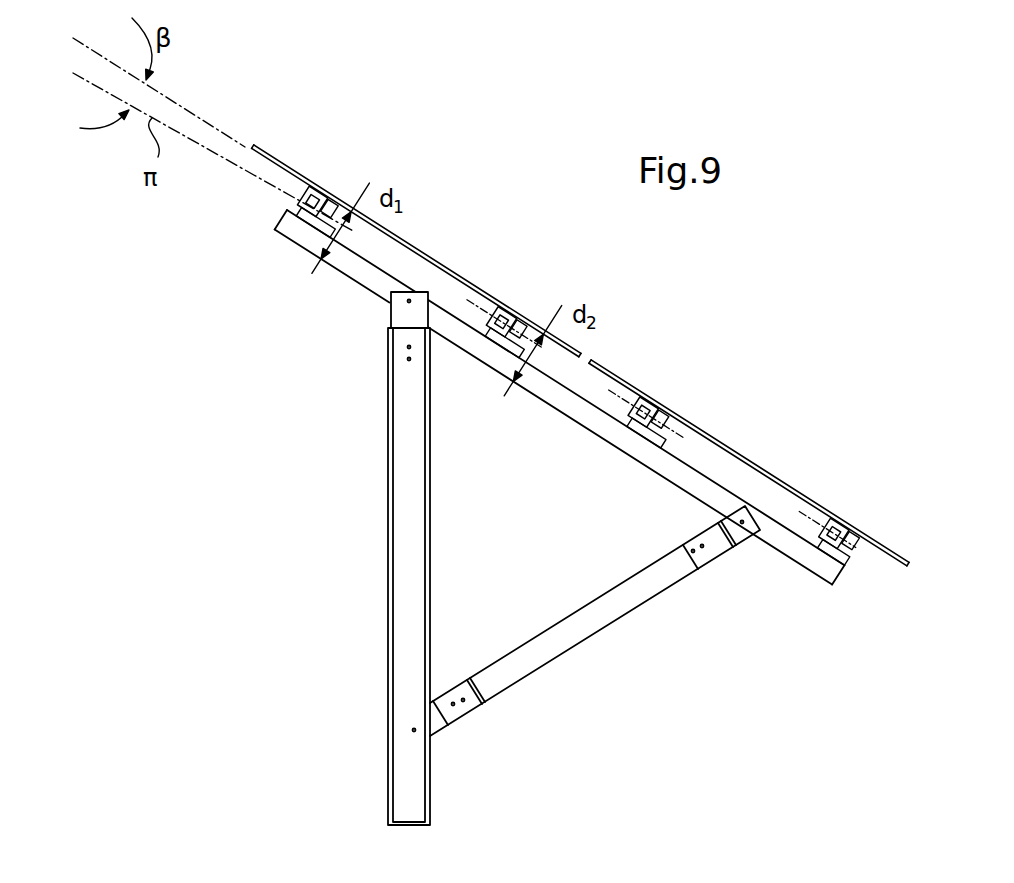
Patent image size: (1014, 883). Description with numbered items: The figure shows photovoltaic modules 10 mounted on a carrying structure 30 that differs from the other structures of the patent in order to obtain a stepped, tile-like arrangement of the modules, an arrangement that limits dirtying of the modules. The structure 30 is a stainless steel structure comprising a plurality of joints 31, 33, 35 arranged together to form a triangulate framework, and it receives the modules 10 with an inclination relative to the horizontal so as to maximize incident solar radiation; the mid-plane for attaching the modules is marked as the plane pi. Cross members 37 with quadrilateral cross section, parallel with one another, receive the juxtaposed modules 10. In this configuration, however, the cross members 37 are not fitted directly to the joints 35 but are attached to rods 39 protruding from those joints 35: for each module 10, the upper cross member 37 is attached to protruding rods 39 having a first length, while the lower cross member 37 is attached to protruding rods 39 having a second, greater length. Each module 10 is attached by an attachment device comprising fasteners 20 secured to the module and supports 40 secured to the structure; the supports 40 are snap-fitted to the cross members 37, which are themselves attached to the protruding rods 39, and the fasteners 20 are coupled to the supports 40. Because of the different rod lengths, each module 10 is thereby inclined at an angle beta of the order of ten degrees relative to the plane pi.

The photovoltaic module 10 is at (437, 258).
The fastener 20 is at (318, 191).
The carrying structure 30 is at (496, 558).
The joint 31 is at (418, 773).
The joint 33 is at (563, 640).
The joint 35 is at (553, 398).
The cross member 37 is at (319, 228).
The protruding rod 39 is at (338, 206).
The support 40 is at (294, 191).